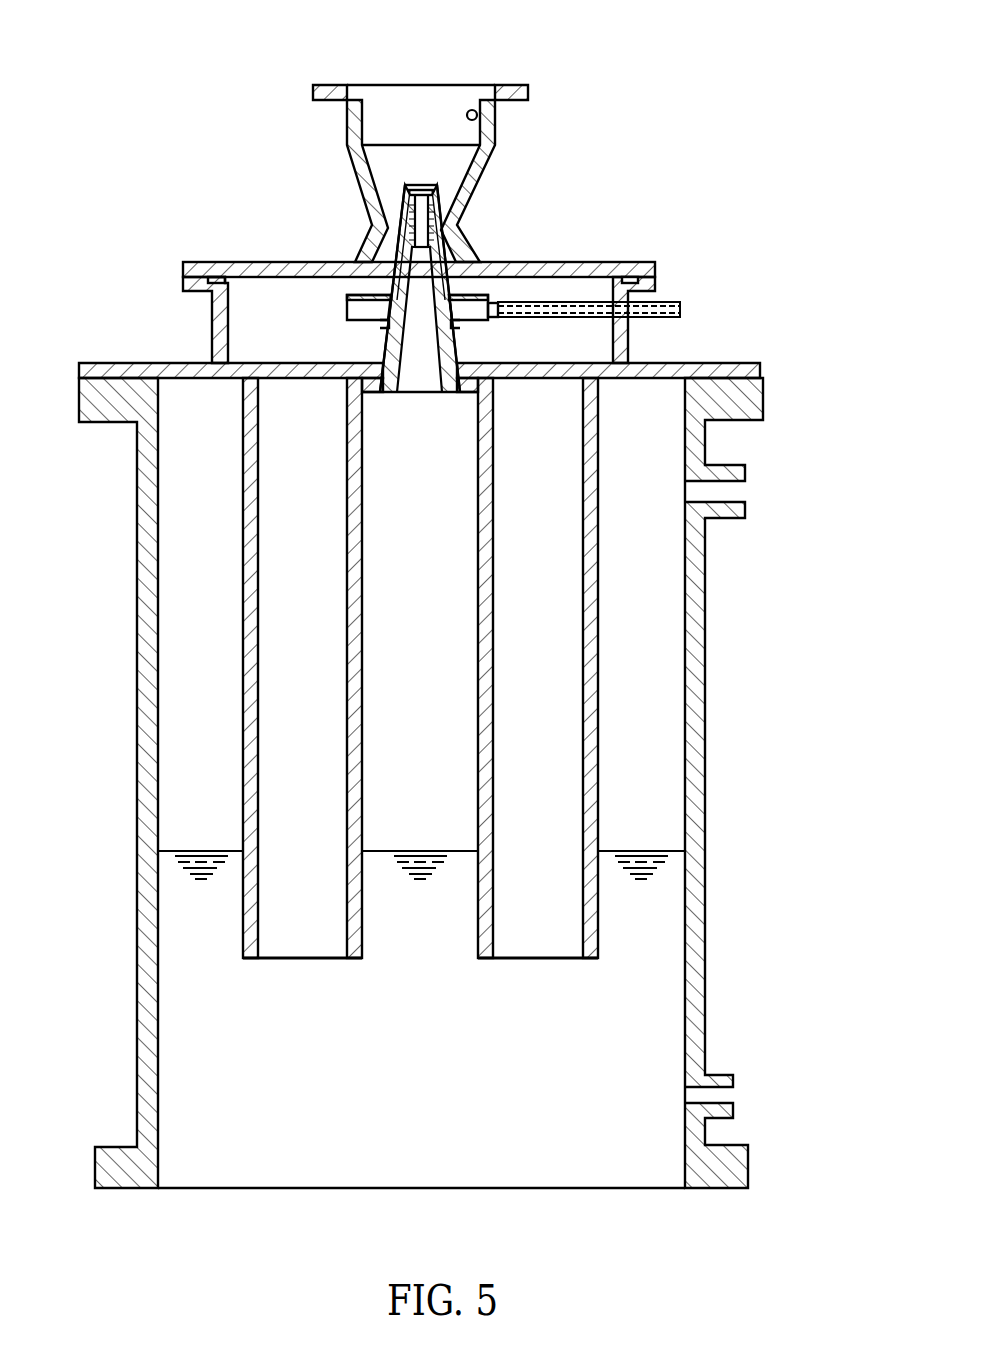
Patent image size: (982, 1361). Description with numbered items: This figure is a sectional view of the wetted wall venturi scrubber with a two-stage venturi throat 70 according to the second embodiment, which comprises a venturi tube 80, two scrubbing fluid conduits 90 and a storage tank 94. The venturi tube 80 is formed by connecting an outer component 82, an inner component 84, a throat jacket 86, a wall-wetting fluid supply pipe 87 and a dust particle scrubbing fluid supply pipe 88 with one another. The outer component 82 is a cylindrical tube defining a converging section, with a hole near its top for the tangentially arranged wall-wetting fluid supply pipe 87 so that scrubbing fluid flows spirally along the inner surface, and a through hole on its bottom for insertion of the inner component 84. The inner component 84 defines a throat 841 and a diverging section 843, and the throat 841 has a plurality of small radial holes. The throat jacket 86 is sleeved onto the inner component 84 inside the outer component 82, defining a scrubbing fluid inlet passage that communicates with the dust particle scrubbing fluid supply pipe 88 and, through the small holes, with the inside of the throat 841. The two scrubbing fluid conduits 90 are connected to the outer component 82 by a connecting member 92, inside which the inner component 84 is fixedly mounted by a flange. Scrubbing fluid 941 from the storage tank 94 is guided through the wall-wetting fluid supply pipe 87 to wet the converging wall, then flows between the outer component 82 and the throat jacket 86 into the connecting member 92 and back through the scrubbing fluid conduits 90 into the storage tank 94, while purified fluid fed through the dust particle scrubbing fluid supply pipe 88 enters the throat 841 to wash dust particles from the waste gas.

The wetted wall venturi scrubber with a 2-stage venturi throat 70 is at (110, 118).
The venturi tube 80 is at (603, 120).
The outer component 82 is at (348, 142).
The inner component 84 is at (285, 170).
The throat 841 is at (417, 213).
The diverging section 843 is at (420, 312).
The throat jacket 86 is at (486, 296).
The wall-wetting fluid supply pipe 87 is at (467, 108).
The dust particle scrubbing fluid supply pipe 88 is at (594, 300).
The scrubbing fluid conduits 90 is at (242, 705).
The connecting member 92 is at (150, 362).
The storage tank 94 is at (702, 683).
The scrubbing fluid 941 is at (672, 880).